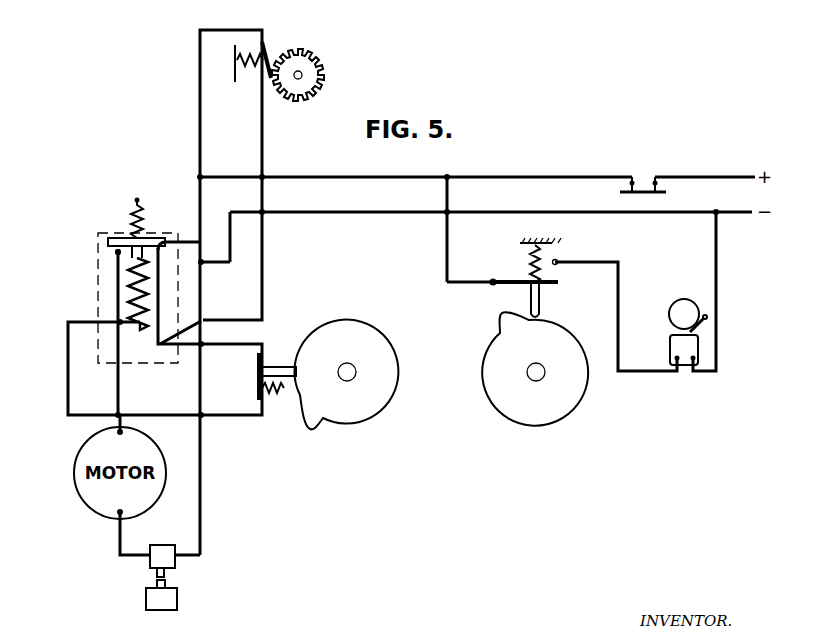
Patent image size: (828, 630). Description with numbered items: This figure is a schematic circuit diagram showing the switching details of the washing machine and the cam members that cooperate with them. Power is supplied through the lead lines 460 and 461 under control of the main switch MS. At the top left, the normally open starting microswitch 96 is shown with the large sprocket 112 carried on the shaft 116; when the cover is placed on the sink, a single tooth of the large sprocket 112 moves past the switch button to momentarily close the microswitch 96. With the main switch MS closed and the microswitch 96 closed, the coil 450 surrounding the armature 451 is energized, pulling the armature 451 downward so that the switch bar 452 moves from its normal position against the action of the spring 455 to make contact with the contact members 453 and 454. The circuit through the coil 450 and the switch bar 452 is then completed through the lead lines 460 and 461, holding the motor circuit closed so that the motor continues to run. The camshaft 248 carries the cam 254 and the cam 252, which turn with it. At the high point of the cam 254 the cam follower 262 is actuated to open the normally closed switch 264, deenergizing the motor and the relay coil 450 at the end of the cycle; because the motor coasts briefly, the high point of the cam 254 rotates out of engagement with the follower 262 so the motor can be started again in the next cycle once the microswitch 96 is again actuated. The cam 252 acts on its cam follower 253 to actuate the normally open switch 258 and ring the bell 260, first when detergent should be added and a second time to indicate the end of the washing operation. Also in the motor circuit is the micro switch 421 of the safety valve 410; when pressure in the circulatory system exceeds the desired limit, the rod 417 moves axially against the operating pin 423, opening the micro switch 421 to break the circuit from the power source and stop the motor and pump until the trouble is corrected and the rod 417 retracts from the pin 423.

The microswitch 96 is at (274, 52).
The shaft 116 is at (301, 72).
The large sprocket 112 is at (316, 87).
The lead line 460 is at (372, 178).
The lead line 461 is at (366, 216).
The main switch MS is at (645, 190).
The armature 451 is at (142, 326).
The switch bar 452 is at (120, 237).
The spring 455 is at (142, 235).
The contact member 453 is at (166, 242).
The contact member 454 is at (114, 250).
The coil 450 is at (127, 284).
The normally closed switch 264 is at (248, 384).
The cam follower 262 is at (279, 366).
The cam 254 is at (358, 412).
The camshaft 248 is at (351, 367).
The cam follower 253 is at (540, 298).
The normally open switch 258 is at (562, 257).
The cam 252 is at (563, 410).
The bell 260 is at (693, 348).
The micro switch 421 is at (164, 551).
The operating pin 423 is at (155, 574).
The rod 417 is at (166, 584).
The safety valve 410 is at (172, 598).